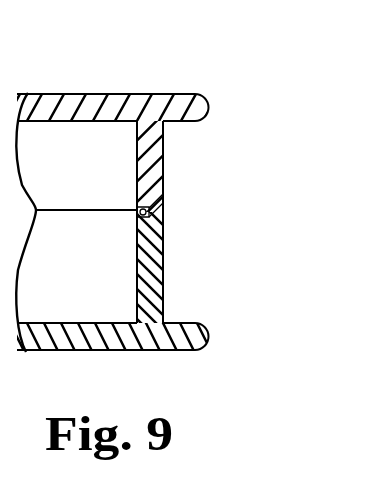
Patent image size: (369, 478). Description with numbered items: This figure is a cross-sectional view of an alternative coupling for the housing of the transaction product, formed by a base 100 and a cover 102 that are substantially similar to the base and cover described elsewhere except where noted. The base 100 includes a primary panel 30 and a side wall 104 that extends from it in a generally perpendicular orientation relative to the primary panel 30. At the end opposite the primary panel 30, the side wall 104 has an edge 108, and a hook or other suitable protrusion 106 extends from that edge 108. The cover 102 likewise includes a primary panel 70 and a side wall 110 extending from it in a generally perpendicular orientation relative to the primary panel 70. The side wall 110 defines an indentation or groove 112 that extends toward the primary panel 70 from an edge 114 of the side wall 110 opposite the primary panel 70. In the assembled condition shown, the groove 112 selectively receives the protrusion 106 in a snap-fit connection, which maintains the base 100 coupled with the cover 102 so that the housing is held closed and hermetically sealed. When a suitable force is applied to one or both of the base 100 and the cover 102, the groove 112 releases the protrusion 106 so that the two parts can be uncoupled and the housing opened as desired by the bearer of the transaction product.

The cover 102 is at (79, 102).
The primary panel 70 is at (191, 98).
The side wall 110 is at (156, 163).
The groove 112 is at (149, 211).
The edge 108 is at (156, 220).
The protrusion 106 is at (140, 212).
The edge 114 is at (147, 220).
The side wall 104 is at (158, 281).
The primary panel 30 is at (106, 351).
The base 100 is at (178, 351).